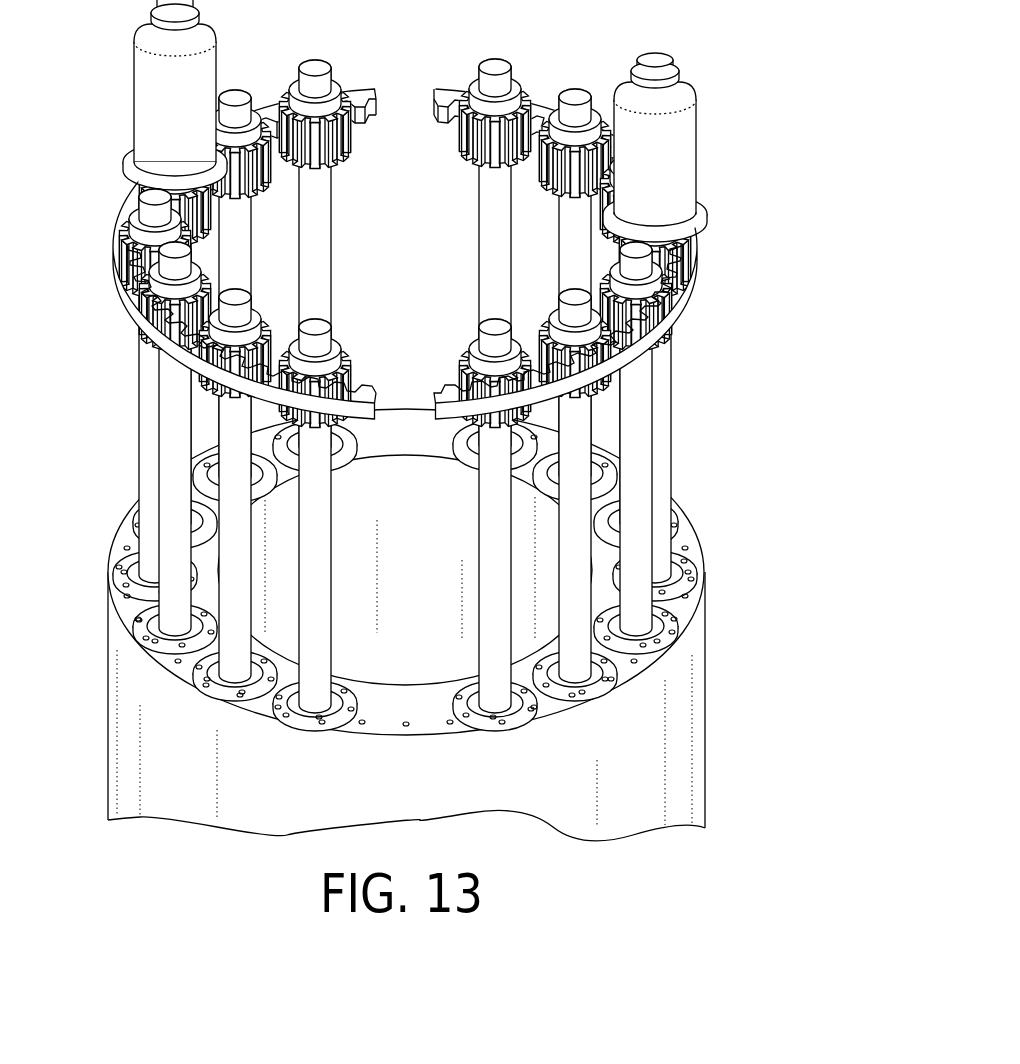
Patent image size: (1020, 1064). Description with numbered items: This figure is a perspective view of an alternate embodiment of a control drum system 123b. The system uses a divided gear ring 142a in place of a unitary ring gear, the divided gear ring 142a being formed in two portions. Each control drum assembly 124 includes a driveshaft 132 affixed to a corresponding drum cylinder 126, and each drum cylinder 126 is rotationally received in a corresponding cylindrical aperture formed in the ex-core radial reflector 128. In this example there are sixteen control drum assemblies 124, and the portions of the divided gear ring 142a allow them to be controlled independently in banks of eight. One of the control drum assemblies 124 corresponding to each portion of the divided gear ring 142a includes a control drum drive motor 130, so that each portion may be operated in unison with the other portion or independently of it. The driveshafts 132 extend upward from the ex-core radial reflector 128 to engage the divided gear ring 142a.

The control drum system 123b is at (460, 356).
The control drum assembly 124 is at (413, 214).
The drum cylinder 126 is at (698, 562).
The ex-core radial reflector 128 is at (705, 715).
The control drum drive motor 130 is at (145, 90).
The driveshaft 132 is at (673, 430).
The divided gear ring 142a is at (693, 303).